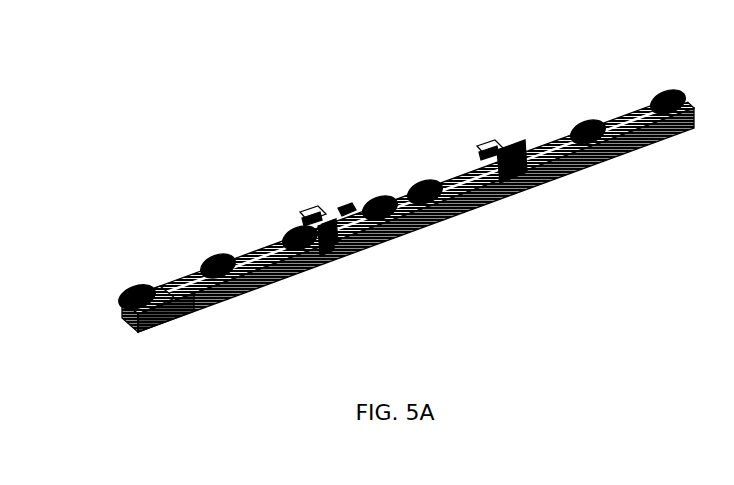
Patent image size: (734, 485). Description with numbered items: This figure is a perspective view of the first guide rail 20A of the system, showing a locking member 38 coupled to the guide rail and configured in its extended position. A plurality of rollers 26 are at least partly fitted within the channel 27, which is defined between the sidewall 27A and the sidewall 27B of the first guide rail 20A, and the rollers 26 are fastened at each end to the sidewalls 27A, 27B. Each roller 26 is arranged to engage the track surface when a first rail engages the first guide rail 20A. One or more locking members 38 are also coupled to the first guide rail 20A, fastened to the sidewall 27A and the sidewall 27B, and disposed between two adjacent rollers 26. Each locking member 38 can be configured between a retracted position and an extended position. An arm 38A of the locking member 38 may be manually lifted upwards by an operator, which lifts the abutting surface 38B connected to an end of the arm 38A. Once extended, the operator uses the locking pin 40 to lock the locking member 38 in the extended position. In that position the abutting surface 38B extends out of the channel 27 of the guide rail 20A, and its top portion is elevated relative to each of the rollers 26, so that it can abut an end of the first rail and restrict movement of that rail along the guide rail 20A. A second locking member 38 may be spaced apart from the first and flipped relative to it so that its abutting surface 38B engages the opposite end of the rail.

The first guide rail 20A is at (377, 105).
The rollers 26 is at (217, 258).
The channel 27 is at (192, 277).
The sidewall 27A is at (147, 307).
The sidewall 27B is at (172, 278).
The locking member 38 is at (323, 258).
The arm 38A is at (352, 214).
The abutting surface 38B is at (305, 210).
The locking pin 40 is at (327, 256).